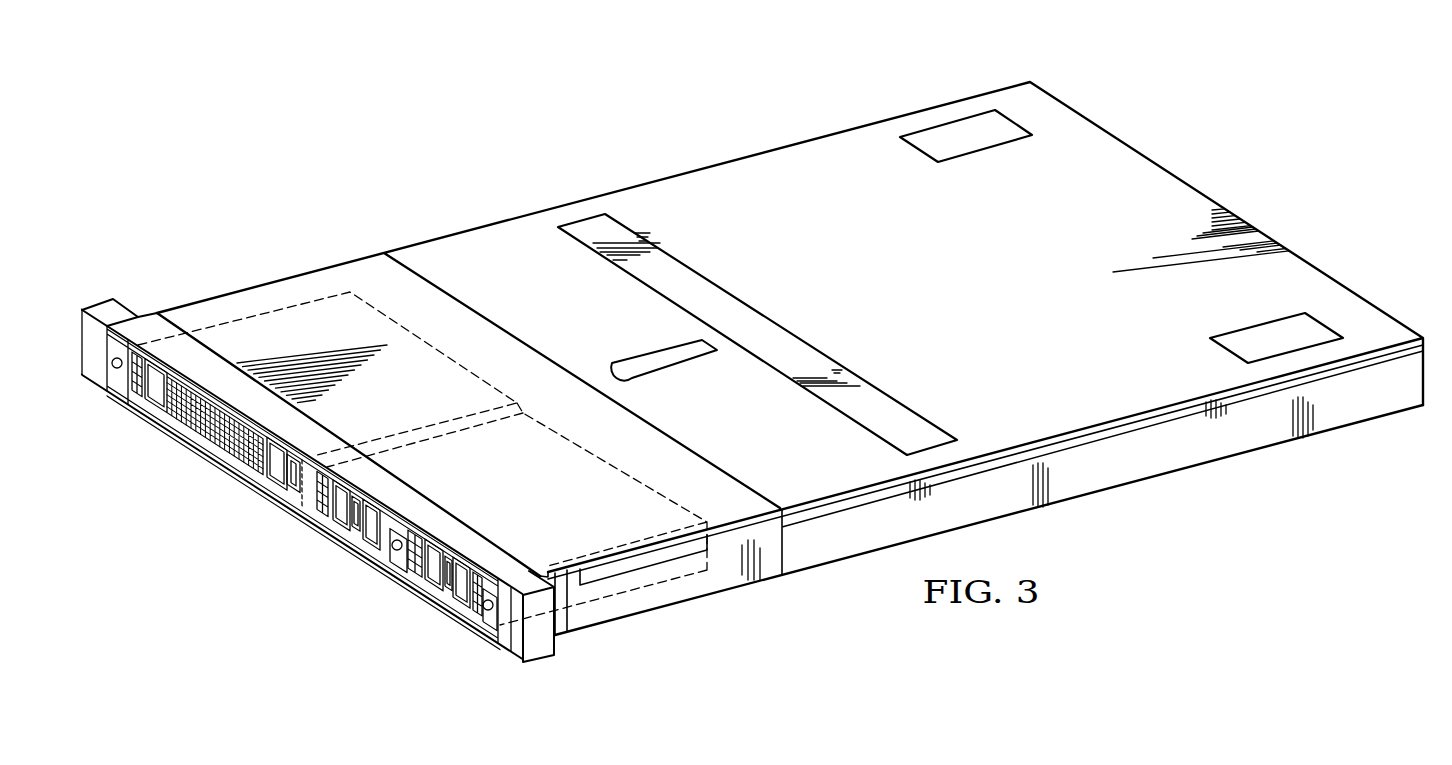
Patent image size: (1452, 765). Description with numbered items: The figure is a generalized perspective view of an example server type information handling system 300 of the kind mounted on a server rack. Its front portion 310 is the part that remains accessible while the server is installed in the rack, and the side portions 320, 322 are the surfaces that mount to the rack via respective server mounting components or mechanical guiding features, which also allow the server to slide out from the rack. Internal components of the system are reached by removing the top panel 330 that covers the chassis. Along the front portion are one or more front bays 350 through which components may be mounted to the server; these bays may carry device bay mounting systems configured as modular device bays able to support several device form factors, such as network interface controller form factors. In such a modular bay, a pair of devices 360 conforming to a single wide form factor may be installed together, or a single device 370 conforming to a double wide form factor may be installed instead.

The server type information handling system 300 is at (348, 148).
The front portion 310 is at (480, 542).
The side portion 320 is at (1163, 462).
The side portion 322 is at (477, 225).
The top panel 330 is at (240, 301).
The front bays 350 is at (437, 348).
The devices 360 is at (336, 528).
The device 370 is at (157, 405).